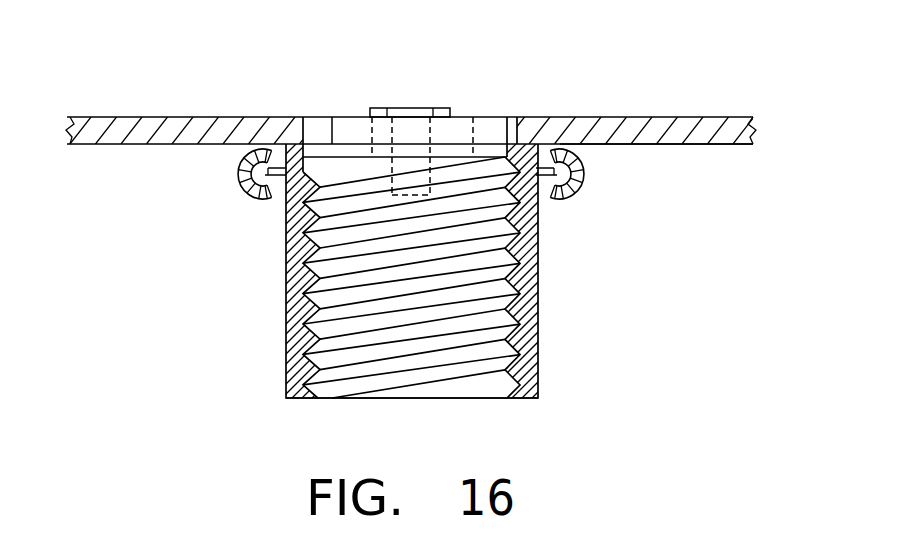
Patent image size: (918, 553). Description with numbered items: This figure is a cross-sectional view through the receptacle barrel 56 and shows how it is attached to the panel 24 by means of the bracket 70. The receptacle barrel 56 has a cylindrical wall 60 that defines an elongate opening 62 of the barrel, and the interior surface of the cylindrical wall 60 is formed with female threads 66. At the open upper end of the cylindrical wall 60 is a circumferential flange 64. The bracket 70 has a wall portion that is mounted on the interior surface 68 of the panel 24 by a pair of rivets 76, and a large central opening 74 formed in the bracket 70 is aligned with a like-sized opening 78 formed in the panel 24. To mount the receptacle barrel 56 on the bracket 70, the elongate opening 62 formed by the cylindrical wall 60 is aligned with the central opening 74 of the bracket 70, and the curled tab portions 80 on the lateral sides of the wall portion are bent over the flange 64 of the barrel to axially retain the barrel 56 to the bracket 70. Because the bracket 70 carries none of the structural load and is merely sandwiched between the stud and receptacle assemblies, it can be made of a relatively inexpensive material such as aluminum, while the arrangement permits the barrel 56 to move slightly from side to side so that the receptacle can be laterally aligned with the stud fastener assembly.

The panel 24 is at (635, 117).
The receptacle barrel 56 is at (286, 272).
The cylindrical wall 60 is at (527, 368).
The elongate opening 62 is at (523, 252).
The circumferential flange 64 is at (250, 172).
The female threads 66 is at (328, 383).
The interior surface 68 is at (672, 145).
The bracket 70 is at (303, 148).
The central opening 74 is at (333, 117).
The rivets 76 is at (403, 108).
The opening 78 is at (507, 117).
The curled tab portion 80 is at (566, 200).